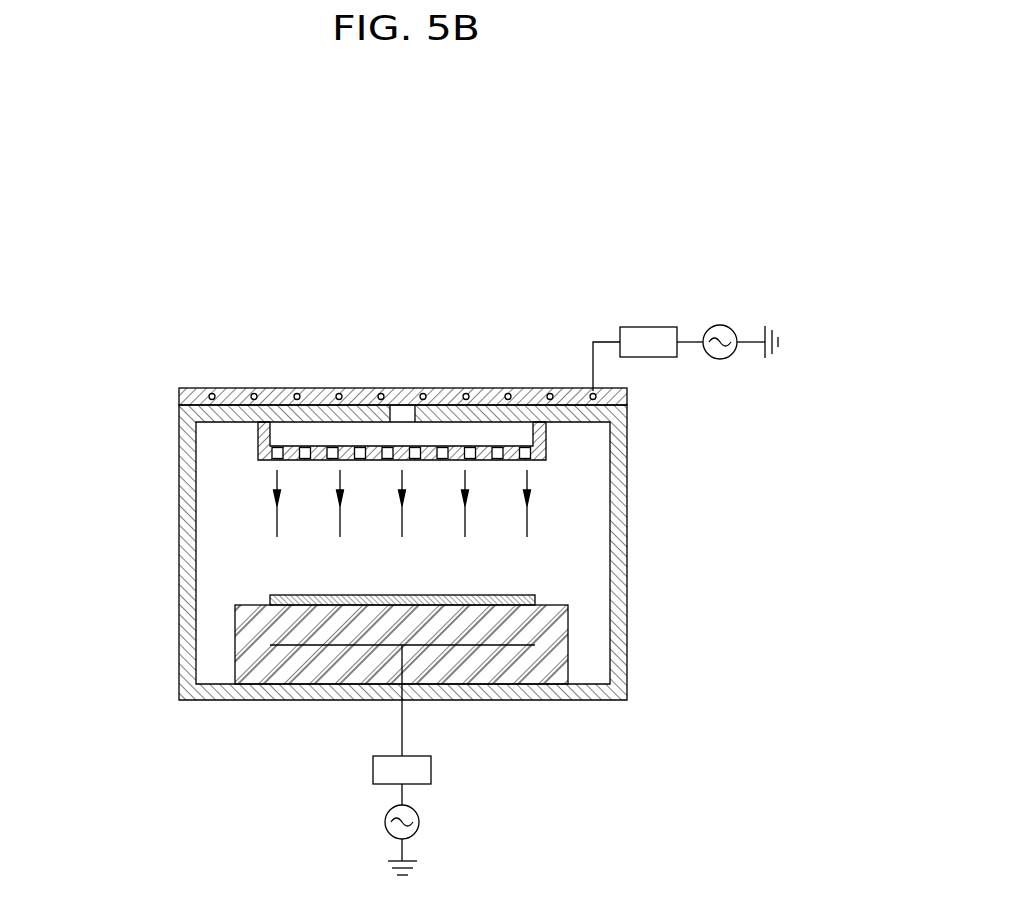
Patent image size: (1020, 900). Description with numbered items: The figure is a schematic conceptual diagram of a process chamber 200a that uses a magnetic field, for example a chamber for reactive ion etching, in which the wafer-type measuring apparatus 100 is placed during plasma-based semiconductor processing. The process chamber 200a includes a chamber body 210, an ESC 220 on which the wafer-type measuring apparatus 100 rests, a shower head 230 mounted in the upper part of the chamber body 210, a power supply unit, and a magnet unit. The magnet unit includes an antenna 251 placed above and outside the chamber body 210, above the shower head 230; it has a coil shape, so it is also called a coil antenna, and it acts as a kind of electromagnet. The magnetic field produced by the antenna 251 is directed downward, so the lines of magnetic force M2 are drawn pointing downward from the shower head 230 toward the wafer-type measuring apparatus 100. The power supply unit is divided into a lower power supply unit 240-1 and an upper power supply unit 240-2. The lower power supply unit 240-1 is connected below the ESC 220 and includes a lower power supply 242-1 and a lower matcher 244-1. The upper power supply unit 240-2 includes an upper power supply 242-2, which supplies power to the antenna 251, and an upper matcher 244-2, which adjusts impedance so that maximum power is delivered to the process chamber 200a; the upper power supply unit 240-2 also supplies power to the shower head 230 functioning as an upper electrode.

The process chamber 200a is at (683, 212).
The chamber body 210 is at (627, 678).
The ESC 220 is at (568, 645).
The shower head 230 is at (547, 433).
The antenna 251 is at (209, 393).
The wafer-type measuring apparatus 100 is at (432, 595).
The lines of magnetic force M2 is at (277, 482).
The lower power supply unit 240-1 is at (520, 760).
The lower matcher 244-1 is at (431, 770).
The lower power supply 242-1 is at (419, 822).
The upper power supply unit 240-2 is at (685, 307).
The upper matcher 244-2 is at (648, 327).
The upper power supply 242-2 is at (720, 325).